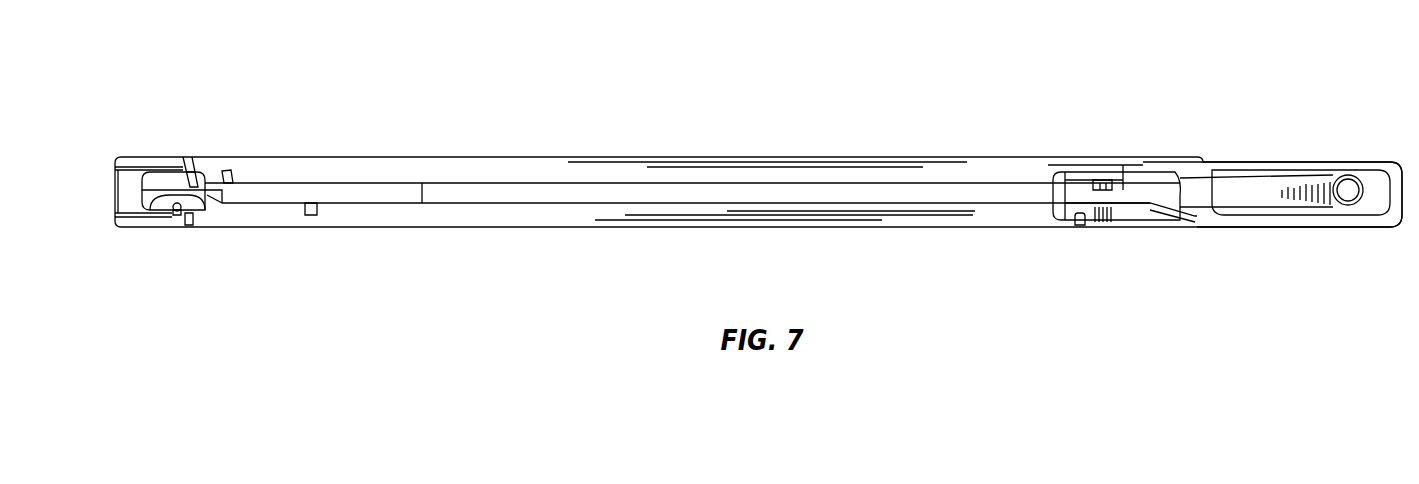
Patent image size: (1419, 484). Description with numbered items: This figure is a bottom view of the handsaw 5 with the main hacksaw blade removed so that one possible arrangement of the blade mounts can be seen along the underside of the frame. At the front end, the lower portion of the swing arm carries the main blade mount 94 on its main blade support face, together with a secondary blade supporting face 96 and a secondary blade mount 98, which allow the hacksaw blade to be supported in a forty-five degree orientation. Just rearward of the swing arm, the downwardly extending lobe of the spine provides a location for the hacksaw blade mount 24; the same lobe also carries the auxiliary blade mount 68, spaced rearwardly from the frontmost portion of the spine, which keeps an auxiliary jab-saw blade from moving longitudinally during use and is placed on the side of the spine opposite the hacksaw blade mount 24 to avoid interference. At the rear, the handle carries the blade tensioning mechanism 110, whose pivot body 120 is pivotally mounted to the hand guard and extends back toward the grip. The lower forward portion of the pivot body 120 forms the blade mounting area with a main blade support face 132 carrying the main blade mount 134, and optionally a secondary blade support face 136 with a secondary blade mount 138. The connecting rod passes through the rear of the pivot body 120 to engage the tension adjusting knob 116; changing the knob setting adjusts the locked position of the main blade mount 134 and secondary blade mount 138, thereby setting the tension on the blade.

The handsaw 5 is at (662, 68).
The hacksaw blade mount 24 is at (227, 171).
The auxiliary blade mount 68 is at (313, 215).
The main blade mount 94 is at (193, 185).
The secondary blade supporting face 96 is at (192, 203).
The secondary blade mount 98 is at (177, 213).
The blade tensioning mechanism 110 is at (1347, 245).
The tension adjusting knob 116 is at (1350, 178).
The pivot body 120 is at (1158, 190).
The main blade support face 132 is at (1112, 183).
The main blade mount 134 is at (1095, 185).
The secondary blade support face 136 is at (1105, 218).
The secondary blade mount 138 is at (1080, 220).